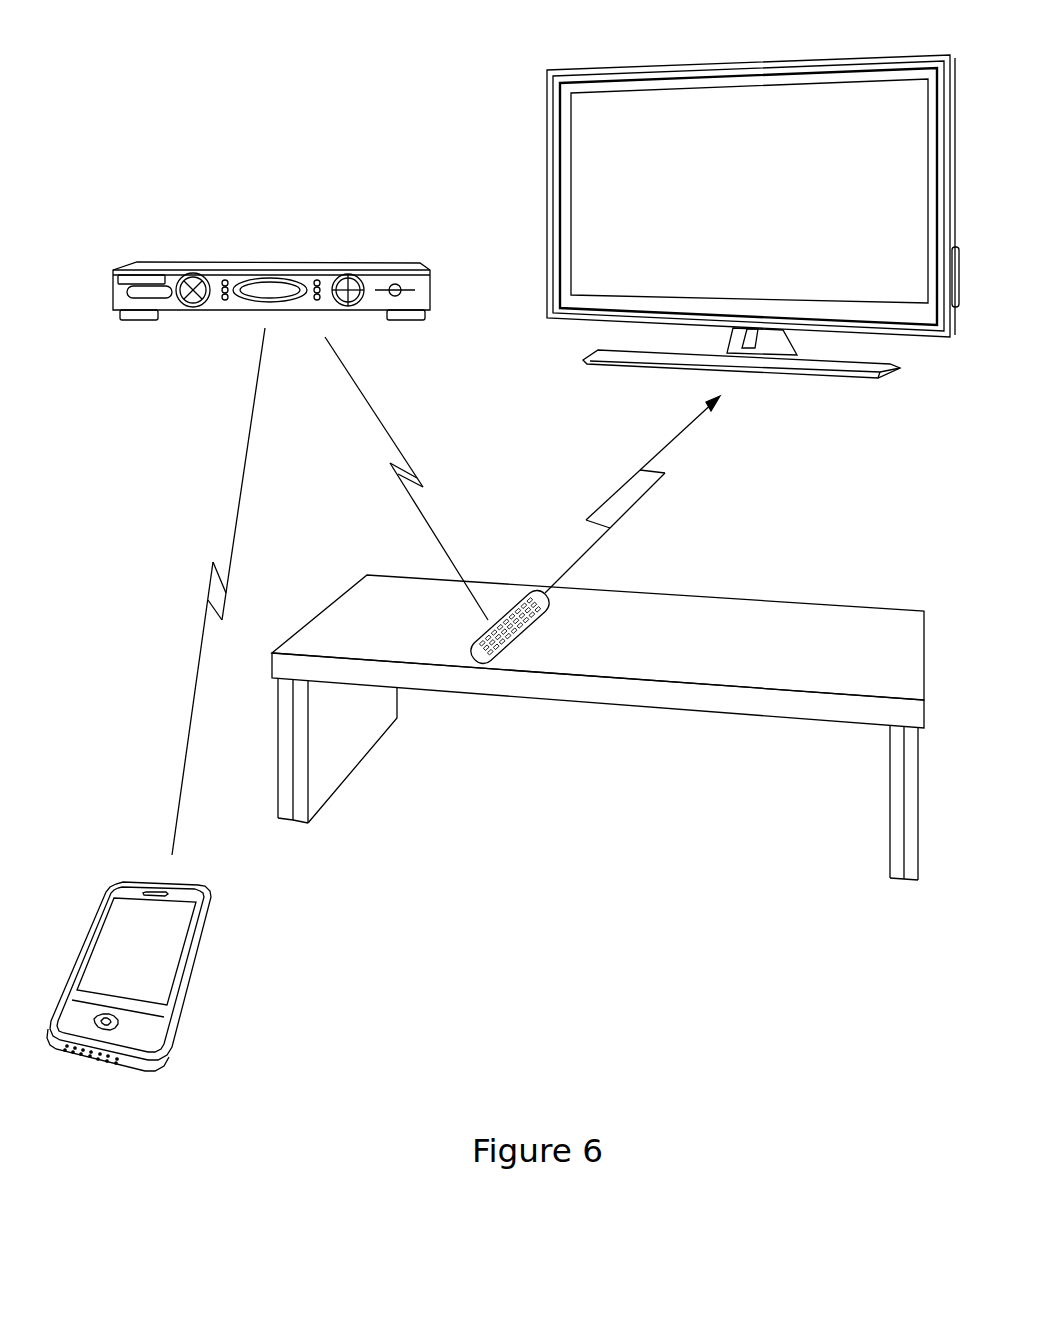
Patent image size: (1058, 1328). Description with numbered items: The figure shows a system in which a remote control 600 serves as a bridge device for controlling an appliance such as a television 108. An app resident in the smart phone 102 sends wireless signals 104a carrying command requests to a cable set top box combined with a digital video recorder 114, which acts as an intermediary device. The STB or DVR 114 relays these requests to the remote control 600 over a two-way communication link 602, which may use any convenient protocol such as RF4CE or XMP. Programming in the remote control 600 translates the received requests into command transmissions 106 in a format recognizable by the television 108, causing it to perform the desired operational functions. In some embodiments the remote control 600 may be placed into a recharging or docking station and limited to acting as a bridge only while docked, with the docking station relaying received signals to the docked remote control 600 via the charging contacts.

The television 108 is at (677, 62).
The cable set top box combined with a digital video recorder 114 is at (247, 260).
The wireless signals 104a is at (248, 430).
The two-way communication link 602 is at (373, 413).
The command transmissions 106 is at (659, 447).
The remote control 600 is at (482, 657).
The smart phone 102 is at (203, 945).